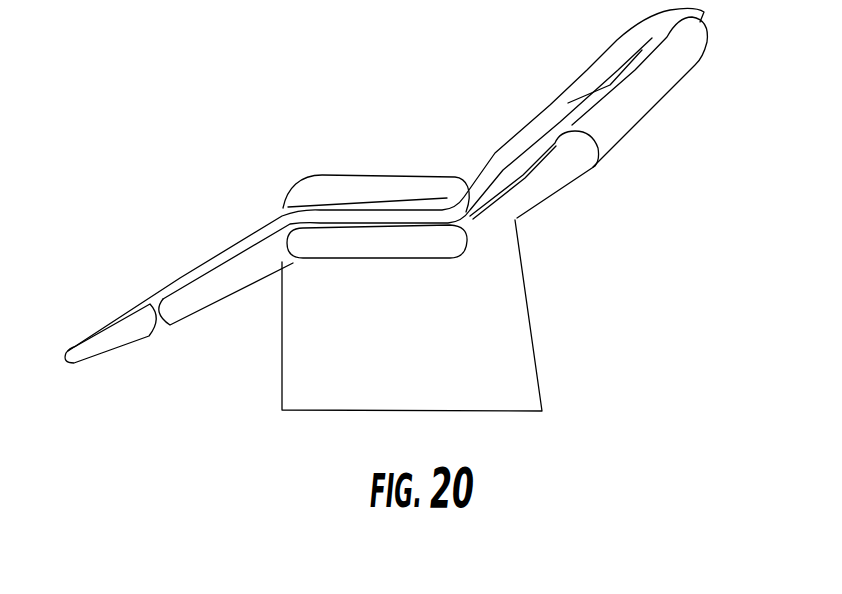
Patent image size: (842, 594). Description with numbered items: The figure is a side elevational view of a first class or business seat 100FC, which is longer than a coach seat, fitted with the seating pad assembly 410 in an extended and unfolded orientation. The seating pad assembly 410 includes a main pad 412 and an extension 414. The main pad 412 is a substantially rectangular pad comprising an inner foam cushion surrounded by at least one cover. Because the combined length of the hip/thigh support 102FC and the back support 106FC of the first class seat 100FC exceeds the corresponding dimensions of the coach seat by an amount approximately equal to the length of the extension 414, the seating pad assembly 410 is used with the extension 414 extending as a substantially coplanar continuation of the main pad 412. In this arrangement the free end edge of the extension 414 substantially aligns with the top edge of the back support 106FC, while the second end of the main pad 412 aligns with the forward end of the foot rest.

The first class or business seat 100FC is at (409, 209).
The hip/thigh support 102FC is at (362, 247).
The back support 106FC is at (558, 190).
The seating pad assembly 410 is at (386, 179).
The main pad 412 is at (492, 153).
The extension 414 is at (606, 50).